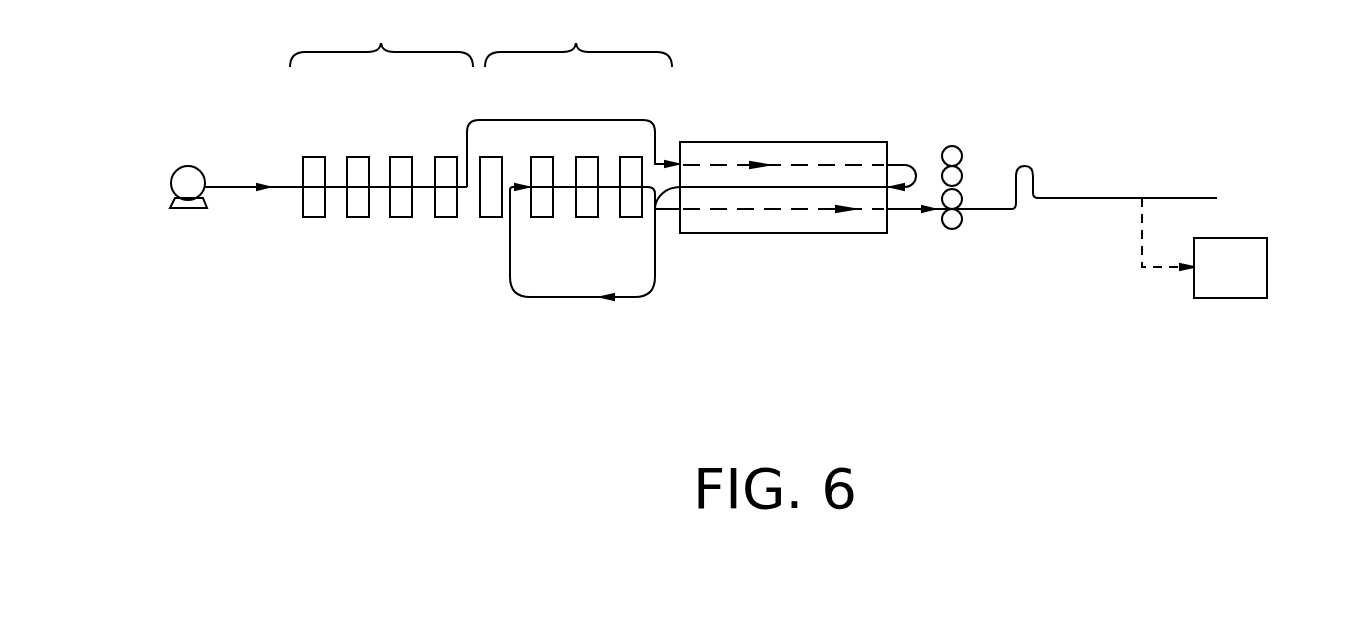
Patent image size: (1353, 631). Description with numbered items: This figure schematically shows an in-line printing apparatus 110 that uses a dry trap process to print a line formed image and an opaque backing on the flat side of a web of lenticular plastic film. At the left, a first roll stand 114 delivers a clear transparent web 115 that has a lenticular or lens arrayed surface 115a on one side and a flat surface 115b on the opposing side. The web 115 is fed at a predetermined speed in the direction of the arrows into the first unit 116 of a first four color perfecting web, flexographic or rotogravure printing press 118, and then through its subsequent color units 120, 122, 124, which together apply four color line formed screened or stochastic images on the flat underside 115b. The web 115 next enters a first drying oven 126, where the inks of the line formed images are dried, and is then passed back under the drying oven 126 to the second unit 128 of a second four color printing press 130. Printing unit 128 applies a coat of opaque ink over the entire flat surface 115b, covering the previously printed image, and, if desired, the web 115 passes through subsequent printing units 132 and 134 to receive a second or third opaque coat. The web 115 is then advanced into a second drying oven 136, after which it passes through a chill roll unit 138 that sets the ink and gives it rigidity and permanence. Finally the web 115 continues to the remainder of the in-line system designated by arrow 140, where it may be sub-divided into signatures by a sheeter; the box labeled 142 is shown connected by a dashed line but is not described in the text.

The in-line printing apparatus 110 is at (1066, 120).
The first roll stand 114 is at (174, 174).
The web 115 is at (240, 189).
The lenticular or lens arrayed surface 115a is at (335, 186).
The flat surface 115b is at (378, 188).
The first unit 116 is at (317, 157).
The first printing press 118 is at (371, 151).
The color unit 120 is at (362, 217).
The color unit 122 is at (400, 157).
The color unit 124 is at (447, 217).
The first drying oven 126 is at (798, 193).
The second unit 128 is at (540, 218).
The second printing press 130 is at (573, 156).
The printing unit 132 is at (585, 157).
The printing unit 134 is at (630, 218).
The second drying oven 136 is at (773, 223).
The chill roll unit 138 is at (955, 229).
The arrow 140 is at (1185, 198).
The controller 142 is at (1268, 268).